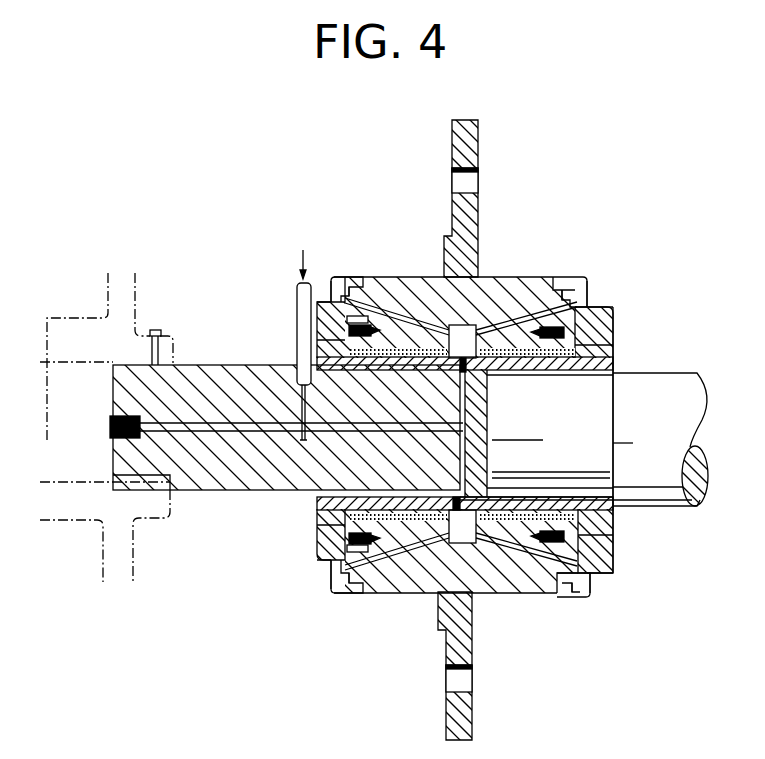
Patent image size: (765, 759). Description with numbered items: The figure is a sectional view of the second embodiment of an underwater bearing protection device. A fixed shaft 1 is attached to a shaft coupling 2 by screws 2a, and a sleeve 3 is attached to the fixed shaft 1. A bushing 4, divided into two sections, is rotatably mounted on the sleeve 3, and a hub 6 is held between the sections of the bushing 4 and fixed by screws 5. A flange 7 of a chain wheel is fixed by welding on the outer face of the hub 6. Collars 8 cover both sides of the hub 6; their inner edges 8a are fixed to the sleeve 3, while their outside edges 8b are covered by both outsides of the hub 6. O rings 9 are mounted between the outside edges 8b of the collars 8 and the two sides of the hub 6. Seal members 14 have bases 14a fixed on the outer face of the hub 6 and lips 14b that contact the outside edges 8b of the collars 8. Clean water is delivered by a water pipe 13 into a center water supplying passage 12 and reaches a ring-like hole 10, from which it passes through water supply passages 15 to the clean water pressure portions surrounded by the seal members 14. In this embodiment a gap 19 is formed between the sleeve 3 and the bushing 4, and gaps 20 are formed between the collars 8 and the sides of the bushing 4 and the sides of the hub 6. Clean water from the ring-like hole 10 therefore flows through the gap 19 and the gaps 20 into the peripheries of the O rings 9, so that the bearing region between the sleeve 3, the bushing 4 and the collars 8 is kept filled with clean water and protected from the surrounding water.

The fixed shaft 1 is at (643, 493).
The shaft coupling 2 is at (85, 313).
The screws 2a is at (154, 330).
The sleeve 3 is at (607, 378).
The bushing 4 is at (550, 356).
The screws 5 is at (570, 358).
The hub 6 is at (493, 276).
The flange 7 is at (455, 146).
The collars 8 is at (626, 328).
The inner edges 8a is at (610, 350).
The outside edges 8b is at (617, 312).
The O rings 9 is at (608, 346).
The ring-like hole 10 is at (483, 362).
The center water supplying passage 12 is at (208, 428).
The water pipe 13 is at (293, 308).
The seal members 14 is at (357, 268).
The bases 14a is at (365, 276).
The lips 14b is at (332, 275).
The water supply passages 15 is at (413, 306).
The gap 19 is at (529, 372).
The gaps 20 is at (633, 352).